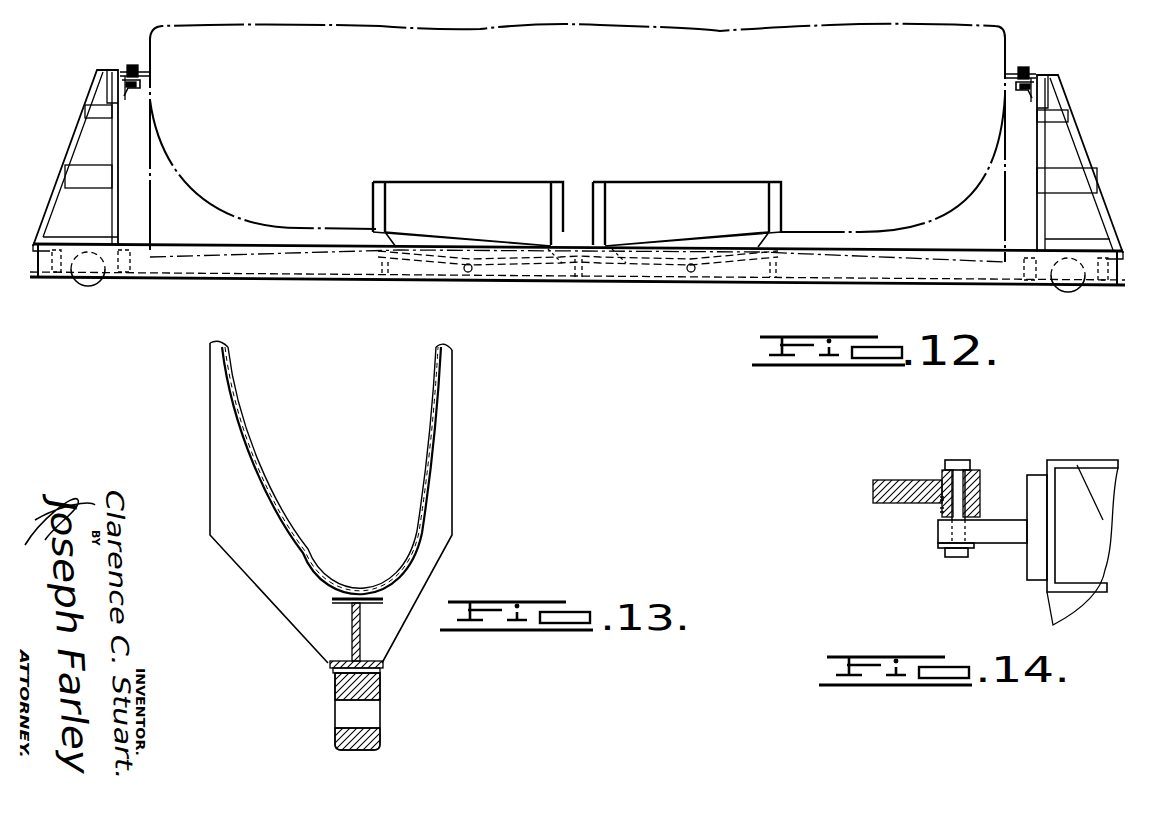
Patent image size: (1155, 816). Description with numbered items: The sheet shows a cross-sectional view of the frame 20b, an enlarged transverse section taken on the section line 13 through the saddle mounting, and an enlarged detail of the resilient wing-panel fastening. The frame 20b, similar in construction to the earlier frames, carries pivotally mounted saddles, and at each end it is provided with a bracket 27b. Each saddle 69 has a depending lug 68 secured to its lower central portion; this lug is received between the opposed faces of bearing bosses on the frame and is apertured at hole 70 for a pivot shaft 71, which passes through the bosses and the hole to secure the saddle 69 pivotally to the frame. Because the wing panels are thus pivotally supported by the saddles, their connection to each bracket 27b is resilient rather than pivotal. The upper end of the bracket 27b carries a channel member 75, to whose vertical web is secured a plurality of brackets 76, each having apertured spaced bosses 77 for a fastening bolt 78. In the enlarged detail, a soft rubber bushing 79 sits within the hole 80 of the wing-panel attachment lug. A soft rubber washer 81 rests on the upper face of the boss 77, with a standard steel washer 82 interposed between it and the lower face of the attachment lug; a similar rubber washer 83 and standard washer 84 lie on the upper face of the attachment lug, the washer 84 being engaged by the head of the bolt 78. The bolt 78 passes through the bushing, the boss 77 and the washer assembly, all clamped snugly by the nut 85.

In FIG. 12, the section line 13— 13 is at (722, 150).
In FIG. 12, the frame 20b is at (958, 282).
In FIG. 12, the bracket 27b is at (80, 132).
In FIG. 12, the pivot shaft 71 is at (472, 270).
In FIG. 12, the channel member 75 is at (126, 66).
In FIG. 12, the bracket 76 is at (128, 100).
In FIG. 13, the depending lug 68 is at (380, 682).
In FIG. 13, the saddle 69 is at (441, 512).
In FIG. 13, the aperture 70 is at (336, 706).
In FIG. 14, the apertured spaced boss 77 is at (897, 480).
In FIG. 14, the fastening bolt 78 is at (963, 462).
In FIG. 14, the soft rubber bushing 79 is at (942, 500).
In FIG. 14, the hole 80 is at (980, 490).
In FIG. 14, the soft rubber washer 81 is at (945, 537).
In FIG. 14, the standard steel washer 82 is at (941, 513).
In FIG. 14, the rubber washer 83 is at (944, 472).
In FIG. 14, the standard washer 84 is at (955, 460).
In FIG. 14, the nut 85 is at (968, 555).